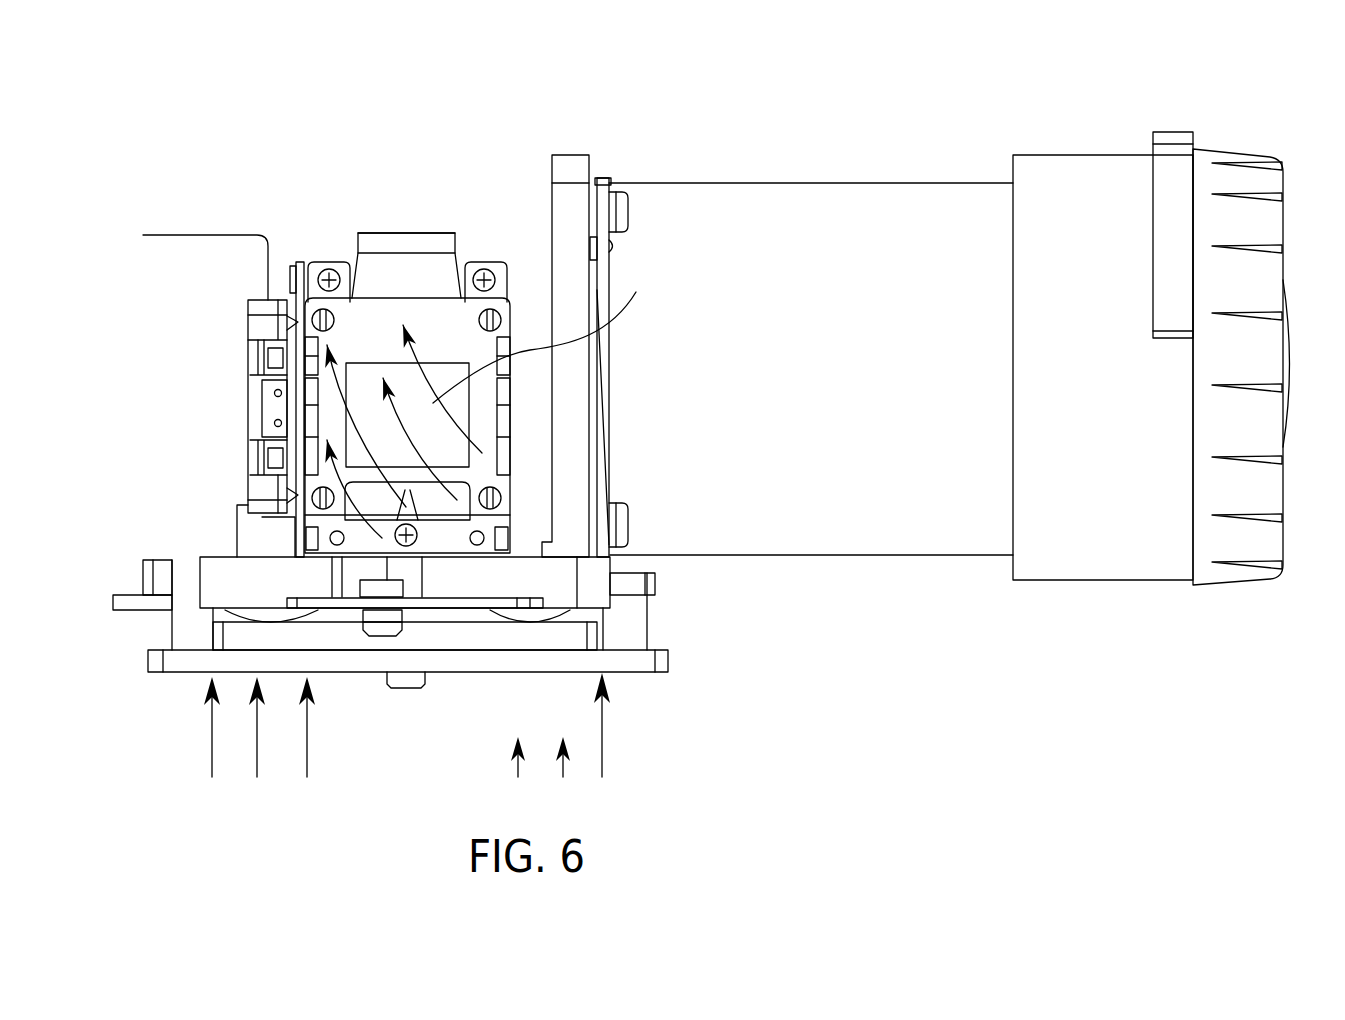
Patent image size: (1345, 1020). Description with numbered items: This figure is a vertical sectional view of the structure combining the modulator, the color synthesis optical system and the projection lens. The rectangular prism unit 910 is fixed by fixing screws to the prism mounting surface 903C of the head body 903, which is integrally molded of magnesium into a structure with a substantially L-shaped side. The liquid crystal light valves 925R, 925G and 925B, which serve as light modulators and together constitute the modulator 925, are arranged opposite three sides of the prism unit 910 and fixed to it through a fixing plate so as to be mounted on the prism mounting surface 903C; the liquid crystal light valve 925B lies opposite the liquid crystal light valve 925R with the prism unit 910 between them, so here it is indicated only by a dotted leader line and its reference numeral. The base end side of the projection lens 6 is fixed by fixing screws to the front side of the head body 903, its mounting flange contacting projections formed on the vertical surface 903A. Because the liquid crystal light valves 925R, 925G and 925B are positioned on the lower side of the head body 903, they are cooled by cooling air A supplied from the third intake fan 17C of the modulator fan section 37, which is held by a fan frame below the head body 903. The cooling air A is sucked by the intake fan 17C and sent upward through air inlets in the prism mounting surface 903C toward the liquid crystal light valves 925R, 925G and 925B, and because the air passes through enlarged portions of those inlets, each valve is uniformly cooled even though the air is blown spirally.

The projection lens 6 is at (882, 212).
The head body 903 is at (550, 195).
The vertical surface 903A is at (549, 385).
The prism mounting surface 903C is at (522, 553).
The prism unit 910 is at (501, 203).
The modulator 925 is at (502, 148).
The liquid crystal light valve 925G is at (248, 373).
The liquid crystal light valve 925R is at (373, 385).
The liquid crystal light valve 925B is at (447, 440).
The modulator fan section 37 is at (372, 683).
The third intake fan 17C is at (518, 658).
The cooling air A is at (602, 733).